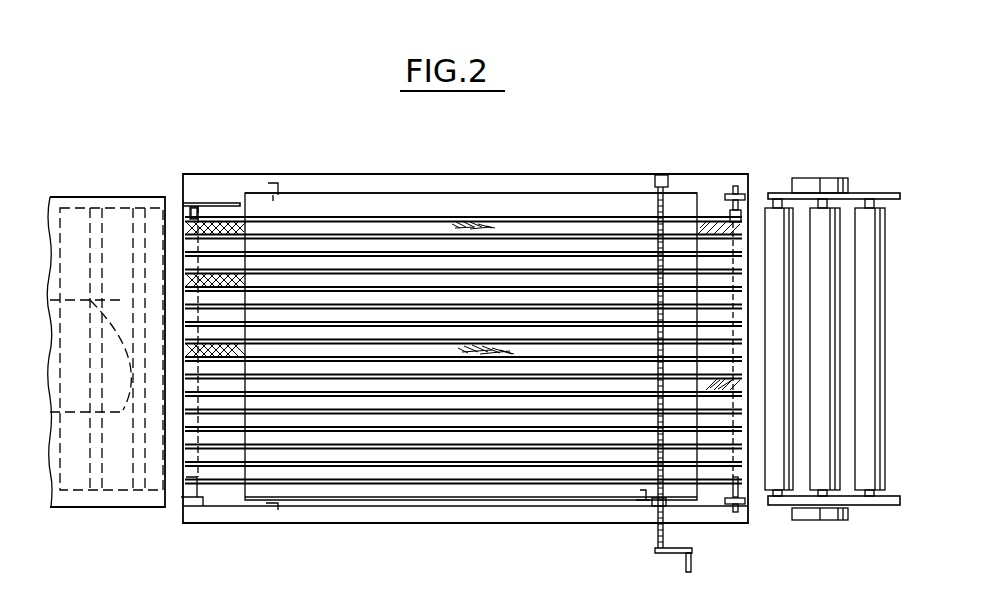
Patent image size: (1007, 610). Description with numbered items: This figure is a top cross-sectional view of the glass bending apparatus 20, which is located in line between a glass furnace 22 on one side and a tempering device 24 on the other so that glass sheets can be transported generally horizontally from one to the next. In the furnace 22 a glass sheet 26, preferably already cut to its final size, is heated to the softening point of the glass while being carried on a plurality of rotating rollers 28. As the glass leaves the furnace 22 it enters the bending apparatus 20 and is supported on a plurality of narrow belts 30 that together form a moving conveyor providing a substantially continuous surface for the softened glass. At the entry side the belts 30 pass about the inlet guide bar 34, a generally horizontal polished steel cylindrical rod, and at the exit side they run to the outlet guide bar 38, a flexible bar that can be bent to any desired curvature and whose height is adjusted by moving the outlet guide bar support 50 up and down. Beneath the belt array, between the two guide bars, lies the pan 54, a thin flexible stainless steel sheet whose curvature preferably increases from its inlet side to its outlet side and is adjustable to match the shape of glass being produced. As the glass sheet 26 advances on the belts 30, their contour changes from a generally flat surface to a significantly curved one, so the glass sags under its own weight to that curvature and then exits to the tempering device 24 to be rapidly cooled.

The glass bending apparatus 20 is at (693, 162).
The glass furnace 22 is at (123, 194).
The tempering device 24 is at (857, 172).
The glass sheet 26 is at (78, 412).
The rotating rollers 28 is at (150, 492).
The narrow belts 30 is at (358, 258).
The inlet guide bar 34 is at (190, 212).
The outlet guide bar 38 is at (740, 210).
The outlet guide bar support 50 is at (729, 190).
The pan 54 is at (557, 192).